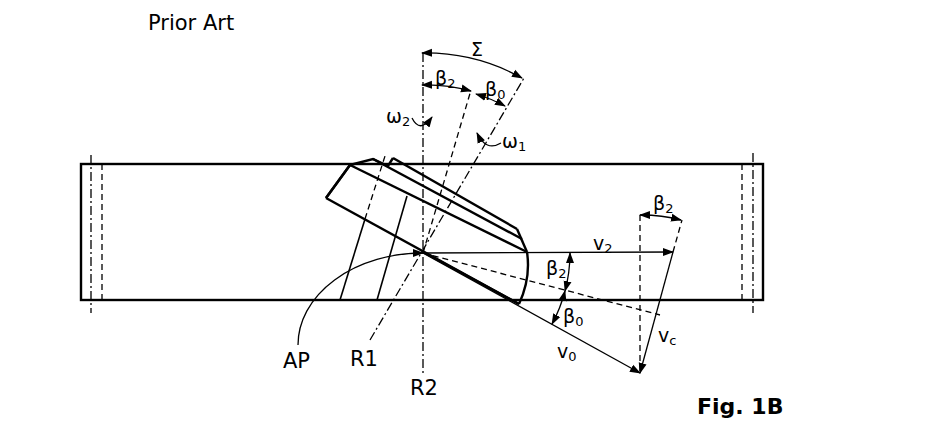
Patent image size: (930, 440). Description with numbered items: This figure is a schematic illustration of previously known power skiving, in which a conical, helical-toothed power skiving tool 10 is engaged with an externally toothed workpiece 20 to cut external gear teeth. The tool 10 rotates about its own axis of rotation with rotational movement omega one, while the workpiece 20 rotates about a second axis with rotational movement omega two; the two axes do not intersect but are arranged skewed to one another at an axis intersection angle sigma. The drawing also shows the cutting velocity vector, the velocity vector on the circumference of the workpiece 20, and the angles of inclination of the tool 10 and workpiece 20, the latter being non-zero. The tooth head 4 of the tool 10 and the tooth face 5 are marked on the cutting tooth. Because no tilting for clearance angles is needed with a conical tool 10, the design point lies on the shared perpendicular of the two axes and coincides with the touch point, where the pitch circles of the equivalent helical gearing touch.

The workpiece 20 is at (125, 153).
The power skiving tool 10 is at (340, 163).
The tooth head 4 is at (322, 199).
The tooth face 5 is at (460, 276).